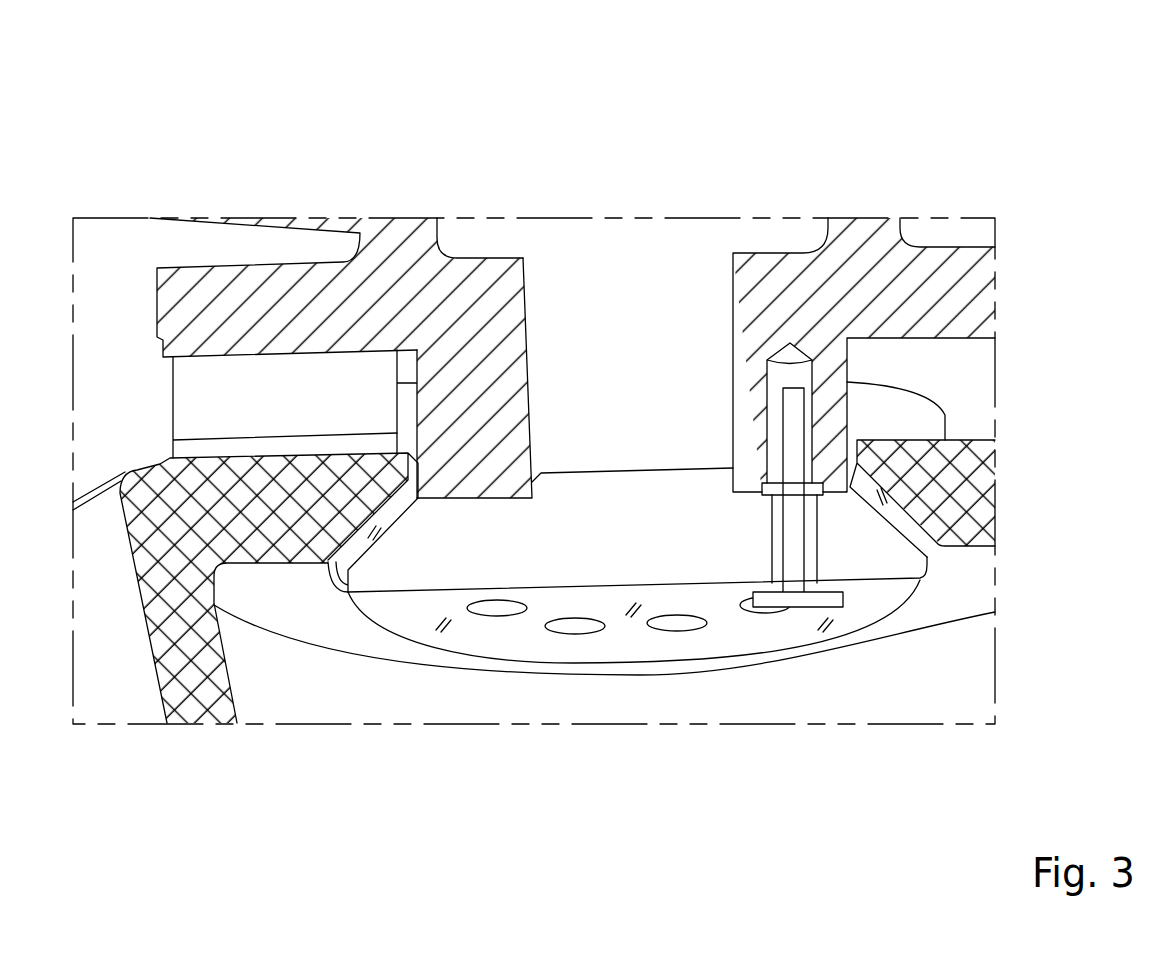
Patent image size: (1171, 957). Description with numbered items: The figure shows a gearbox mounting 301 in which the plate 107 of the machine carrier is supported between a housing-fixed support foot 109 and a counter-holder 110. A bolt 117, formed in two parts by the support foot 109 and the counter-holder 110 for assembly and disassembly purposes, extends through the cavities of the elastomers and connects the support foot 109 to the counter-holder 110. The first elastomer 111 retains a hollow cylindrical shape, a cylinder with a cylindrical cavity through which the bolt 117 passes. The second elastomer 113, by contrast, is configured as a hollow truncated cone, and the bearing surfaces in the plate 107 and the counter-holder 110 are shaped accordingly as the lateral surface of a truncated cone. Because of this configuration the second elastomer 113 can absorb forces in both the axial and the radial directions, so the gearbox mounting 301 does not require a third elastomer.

The plate 107 is at (962, 493).
The support foot 109 is at (312, 297).
The counter-holder 110 is at (675, 553).
The first elastomer 111 is at (223, 392).
The second elastomer 113 is at (352, 547).
The bolt 117 is at (530, 340).
The gearbox mounting 301 is at (761, 141).